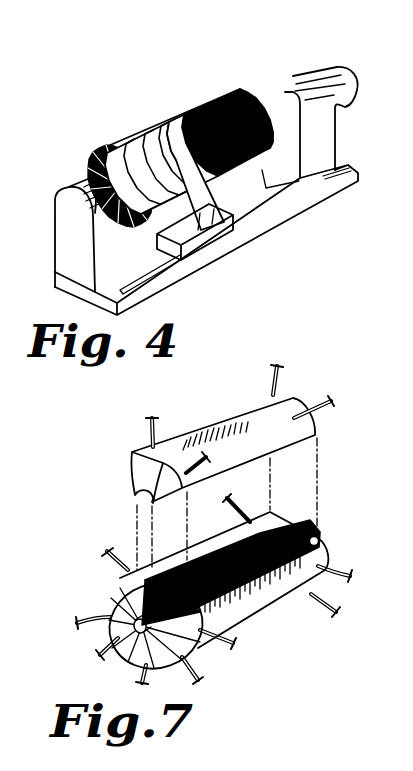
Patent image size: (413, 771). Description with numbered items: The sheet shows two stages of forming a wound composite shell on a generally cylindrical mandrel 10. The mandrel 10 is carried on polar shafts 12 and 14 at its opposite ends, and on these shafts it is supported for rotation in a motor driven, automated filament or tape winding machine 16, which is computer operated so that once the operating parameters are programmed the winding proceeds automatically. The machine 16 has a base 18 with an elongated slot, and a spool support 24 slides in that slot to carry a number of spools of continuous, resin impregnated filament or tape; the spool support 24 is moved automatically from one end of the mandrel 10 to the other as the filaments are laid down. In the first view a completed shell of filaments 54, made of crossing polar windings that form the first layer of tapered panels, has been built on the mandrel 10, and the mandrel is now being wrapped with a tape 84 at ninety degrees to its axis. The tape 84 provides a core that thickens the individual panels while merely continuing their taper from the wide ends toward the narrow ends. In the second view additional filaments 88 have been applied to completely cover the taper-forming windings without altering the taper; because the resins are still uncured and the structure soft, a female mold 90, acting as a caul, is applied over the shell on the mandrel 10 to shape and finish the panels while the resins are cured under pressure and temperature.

In FIG. 4, the mandrel 10 is at (250, 85).
In FIG. 4, the polar shaft 12 is at (48, 194).
In FIG. 7, the polar shaft 12 is at (128, 632).
In FIG. 7, the polar shaft 14 is at (320, 548).
In FIG. 4, the winding machine 16 is at (362, 85).
In FIG. 4, the base 18 is at (158, 288).
In FIG. 4, the spool support 24 is at (58, 191).
In FIG. 7, the spool support 24 is at (158, 504).
In FIG. 4, the shell of filaments 54 is at (189, 100).
In FIG. 4, the tape 84 is at (136, 146).
In FIG. 7, the additional filaments 88 is at (294, 527).
In FIG. 7, the female mold 90 is at (306, 390).